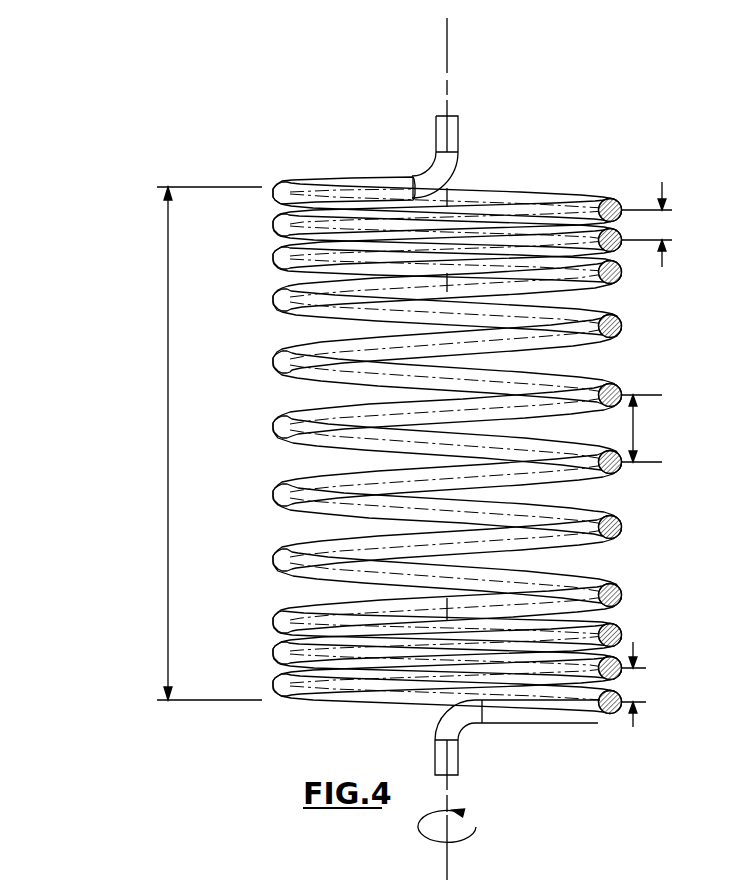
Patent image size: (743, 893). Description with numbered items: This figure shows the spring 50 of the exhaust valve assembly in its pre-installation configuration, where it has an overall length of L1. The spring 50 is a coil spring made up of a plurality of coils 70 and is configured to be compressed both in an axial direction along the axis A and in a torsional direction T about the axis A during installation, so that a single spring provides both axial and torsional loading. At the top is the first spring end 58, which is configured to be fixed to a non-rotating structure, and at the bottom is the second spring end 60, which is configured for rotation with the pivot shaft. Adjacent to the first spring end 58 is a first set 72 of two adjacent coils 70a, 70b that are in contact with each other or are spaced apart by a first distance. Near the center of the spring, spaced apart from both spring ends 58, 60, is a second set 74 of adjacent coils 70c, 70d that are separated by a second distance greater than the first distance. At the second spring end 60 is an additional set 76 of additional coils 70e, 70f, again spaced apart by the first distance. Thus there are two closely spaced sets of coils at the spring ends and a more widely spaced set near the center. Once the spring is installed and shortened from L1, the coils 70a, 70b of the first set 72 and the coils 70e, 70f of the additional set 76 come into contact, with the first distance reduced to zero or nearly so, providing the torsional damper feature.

The spring 50 is at (464, 427).
The first spring end 58 is at (458, 135).
The second spring end 60 is at (458, 765).
The coils 70 is at (441, 455).
The coil 70a is at (608, 199).
The coil 70b is at (617, 250).
The coil 70c is at (613, 385).
The coil 70d is at (617, 472).
The additional coil 70e is at (620, 642).
The additional coil 70f is at (611, 716).
The first set of adjacent coils 72 is at (631, 186).
The second set of adjacent coils 74 is at (670, 420).
The additional set of coils 76 is at (670, 677).
The axis A is at (447, 54).
The overall length L1 is at (209, 443).
The torsional direction T is at (476, 827).